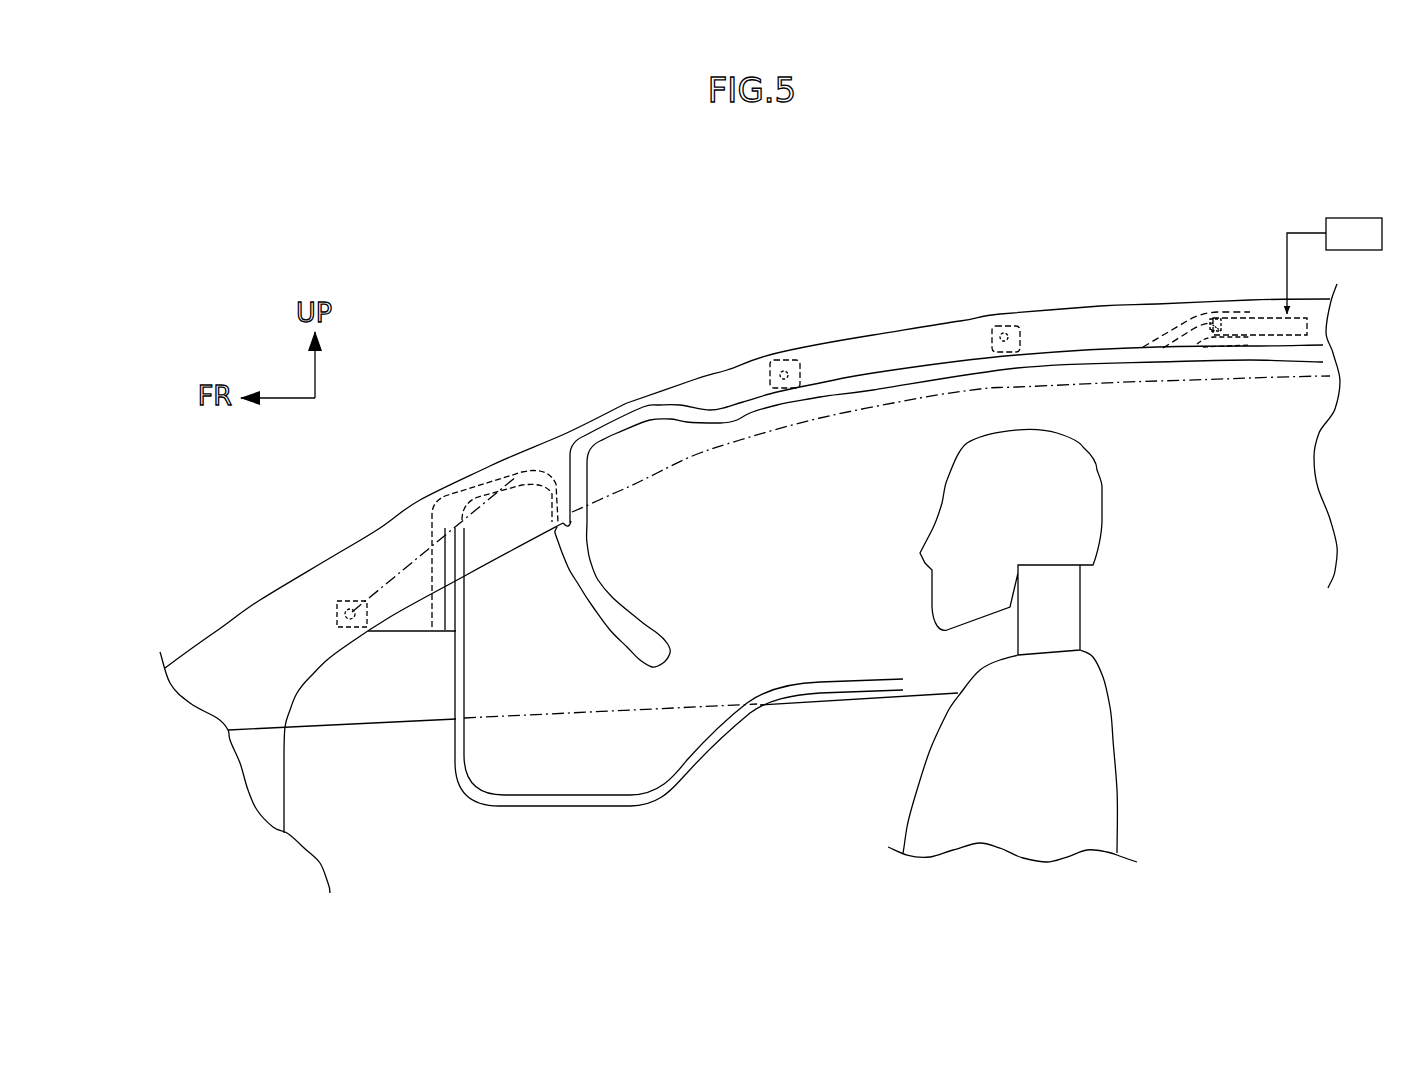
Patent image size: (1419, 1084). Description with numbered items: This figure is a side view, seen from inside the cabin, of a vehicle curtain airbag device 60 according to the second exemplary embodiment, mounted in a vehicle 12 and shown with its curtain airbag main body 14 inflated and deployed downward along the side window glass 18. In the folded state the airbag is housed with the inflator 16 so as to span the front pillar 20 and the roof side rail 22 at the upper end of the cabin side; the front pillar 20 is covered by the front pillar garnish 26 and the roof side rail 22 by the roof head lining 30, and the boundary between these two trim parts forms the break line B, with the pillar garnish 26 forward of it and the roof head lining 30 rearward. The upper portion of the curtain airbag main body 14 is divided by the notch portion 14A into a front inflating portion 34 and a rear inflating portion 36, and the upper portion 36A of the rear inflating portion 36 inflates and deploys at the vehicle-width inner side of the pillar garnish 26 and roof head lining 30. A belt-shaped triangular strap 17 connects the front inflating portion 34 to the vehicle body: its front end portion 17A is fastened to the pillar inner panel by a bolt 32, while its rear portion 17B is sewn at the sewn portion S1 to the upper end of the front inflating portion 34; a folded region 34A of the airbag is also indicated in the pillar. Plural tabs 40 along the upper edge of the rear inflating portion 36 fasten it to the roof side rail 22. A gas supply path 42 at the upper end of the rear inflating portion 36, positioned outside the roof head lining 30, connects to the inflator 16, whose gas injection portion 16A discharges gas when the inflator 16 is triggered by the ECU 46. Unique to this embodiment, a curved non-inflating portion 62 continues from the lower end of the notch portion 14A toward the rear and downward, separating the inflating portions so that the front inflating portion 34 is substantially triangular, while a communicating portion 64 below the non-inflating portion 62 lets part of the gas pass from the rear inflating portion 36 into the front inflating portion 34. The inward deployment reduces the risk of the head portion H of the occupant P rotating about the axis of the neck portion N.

The vehicle 12 is at (186, 620).
The curtain airbag main body 14 is at (573, 818).
The notch portion 14A is at (570, 458).
The inflator 16 is at (1263, 315).
The gas injection portion 16A is at (1213, 310).
The triangular strap 17 is at (395, 639).
The front end portion 17A is at (343, 628).
The rear portion 17B is at (438, 639).
The side window glass 18 is at (800, 635).
The front pillar 20 is at (398, 511).
The roof side rail 22 is at (958, 316).
The front pillar garnish 26 is at (412, 525).
The roof head lining 30 is at (1073, 330).
The bolt 32 is at (347, 600).
The front inflating portion 34 is at (498, 812).
The folded airbag portion 34A is at (504, 517).
The rear inflating portion 36 is at (835, 692).
The upper portion 36A is at (676, 447).
The tabs 40 is at (798, 362).
The gas supply path 42 is at (1158, 308).
The ECU 46 is at (1345, 218).
The vehicle curtain airbag device 60 is at (846, 312).
The non-inflating portion 62 is at (638, 626).
The communicating portion 64 is at (697, 680).
The break line B is at (657, 473).
The sewn portion S1 is at (445, 605).
The head portion H is at (1087, 497).
The neck portion N is at (1064, 611).
The vehicle occupant P is at (1118, 743).